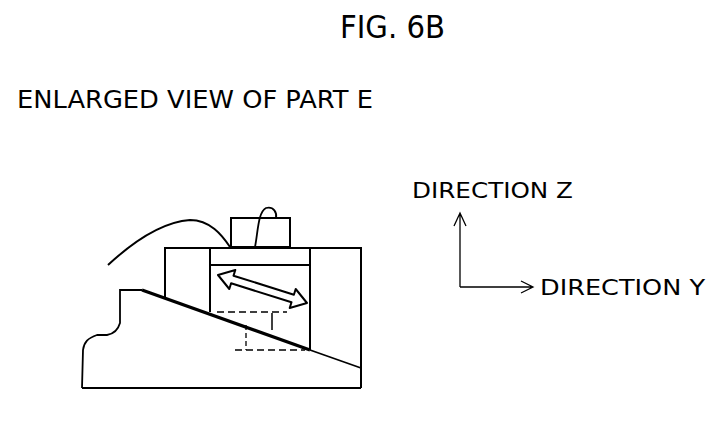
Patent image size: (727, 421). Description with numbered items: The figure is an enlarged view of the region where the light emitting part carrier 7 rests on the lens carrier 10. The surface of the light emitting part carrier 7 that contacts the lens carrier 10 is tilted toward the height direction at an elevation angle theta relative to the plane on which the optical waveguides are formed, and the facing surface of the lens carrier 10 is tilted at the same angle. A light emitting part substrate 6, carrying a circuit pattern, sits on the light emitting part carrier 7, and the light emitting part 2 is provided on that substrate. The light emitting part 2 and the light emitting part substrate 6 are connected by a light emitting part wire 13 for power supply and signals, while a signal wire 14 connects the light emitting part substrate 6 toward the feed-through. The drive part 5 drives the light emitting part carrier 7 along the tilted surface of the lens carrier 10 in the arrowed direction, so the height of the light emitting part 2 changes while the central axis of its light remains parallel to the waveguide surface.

The light emitting part 2 is at (242, 218).
The drive part 5 is at (335, 248).
The light emitting part substrate 6 is at (302, 247).
The light emitting part carrier 7 is at (312, 282).
The lens carrier 10 is at (114, 329).
The light emitting part wire 13 is at (271, 210).
The signal wire 14 is at (137, 242).